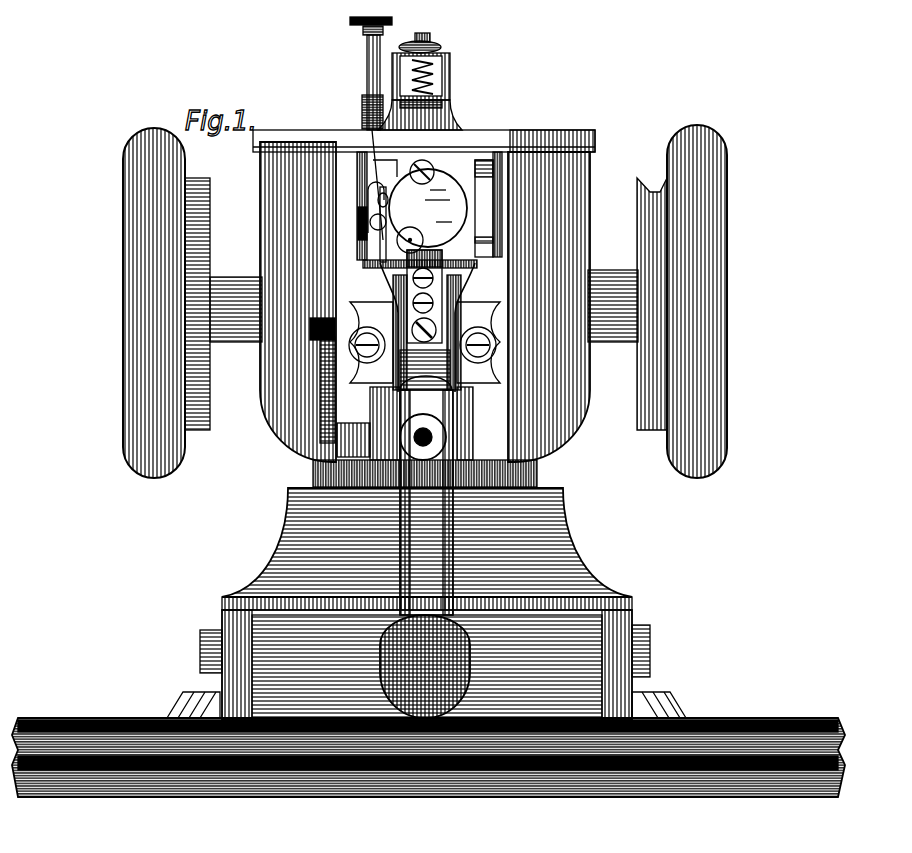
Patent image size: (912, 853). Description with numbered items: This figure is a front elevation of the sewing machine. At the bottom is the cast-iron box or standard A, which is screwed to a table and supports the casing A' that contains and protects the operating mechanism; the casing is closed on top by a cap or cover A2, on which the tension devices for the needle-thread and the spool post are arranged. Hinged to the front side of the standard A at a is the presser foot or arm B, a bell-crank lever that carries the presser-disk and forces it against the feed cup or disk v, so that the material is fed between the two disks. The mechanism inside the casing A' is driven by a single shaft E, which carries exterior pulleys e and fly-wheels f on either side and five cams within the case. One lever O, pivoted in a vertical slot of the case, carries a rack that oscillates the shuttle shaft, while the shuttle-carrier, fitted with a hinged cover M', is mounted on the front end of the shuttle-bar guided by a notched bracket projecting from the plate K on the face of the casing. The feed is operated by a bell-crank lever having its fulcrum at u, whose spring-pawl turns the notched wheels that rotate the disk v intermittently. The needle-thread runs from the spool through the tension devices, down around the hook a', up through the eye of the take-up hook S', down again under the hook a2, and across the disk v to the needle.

The box or standard A is at (426, 604).
The casing A' is at (424, 308).
The cap or cover A2 is at (462, 82).
The presser foot or arm B is at (426, 432).
The shaft E is at (424, 296).
The plate K is at (385, 167).
The hinged cover M' is at (428, 203).
The lever O is at (494, 209).
The take-up hook S' is at (365, 128).
The hinge of presser arm a is at (420, 666).
The hook a' is at (396, 224).
The hook a2 is at (419, 254).
The pulley e is at (652, 292).
The fly-wheel f is at (425, 301).
The fulcrum u is at (418, 379).
The feed cup or disk v is at (382, 270).